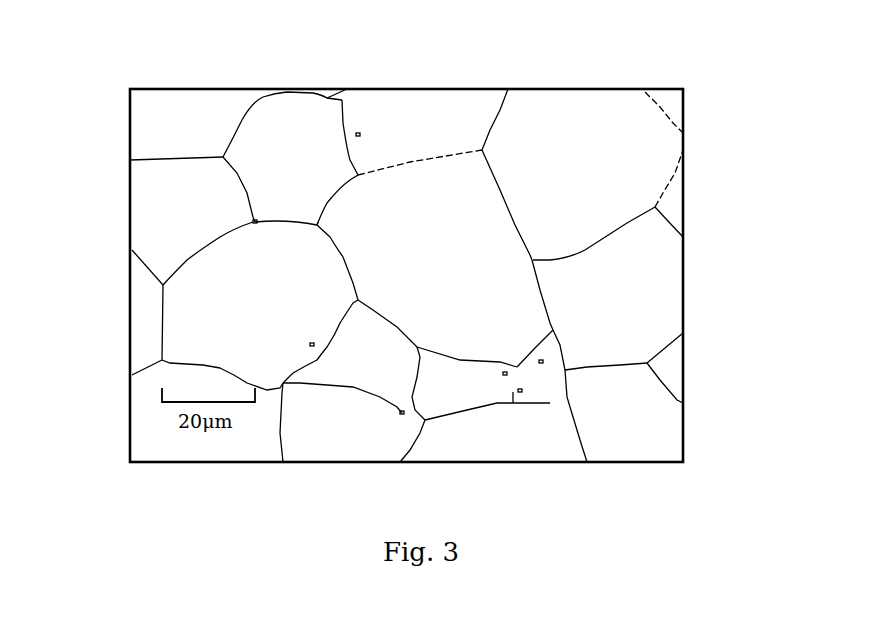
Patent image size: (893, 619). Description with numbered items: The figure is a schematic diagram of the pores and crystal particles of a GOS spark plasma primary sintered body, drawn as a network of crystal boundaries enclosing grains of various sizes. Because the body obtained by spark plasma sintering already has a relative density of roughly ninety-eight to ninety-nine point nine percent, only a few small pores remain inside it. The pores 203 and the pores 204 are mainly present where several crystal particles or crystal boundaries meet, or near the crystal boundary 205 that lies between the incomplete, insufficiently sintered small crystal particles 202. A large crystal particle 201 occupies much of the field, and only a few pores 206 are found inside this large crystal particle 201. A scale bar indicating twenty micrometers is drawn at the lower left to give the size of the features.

The large crystal particle 201 is at (203, 288).
The small crystal particles 202 is at (553, 340).
The pores 203 is at (317, 225).
The pores 204 is at (513, 372).
The crystal boundary 205 is at (513, 392).
The pores 206 is at (330, 386).